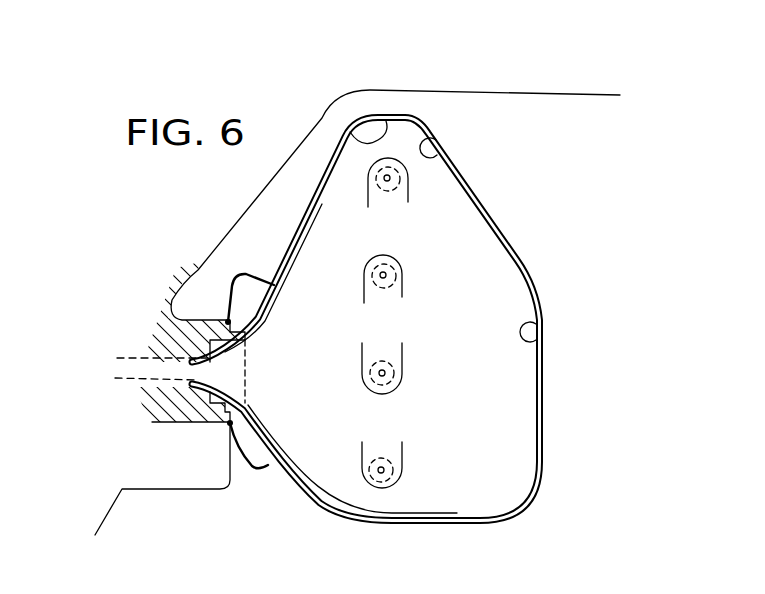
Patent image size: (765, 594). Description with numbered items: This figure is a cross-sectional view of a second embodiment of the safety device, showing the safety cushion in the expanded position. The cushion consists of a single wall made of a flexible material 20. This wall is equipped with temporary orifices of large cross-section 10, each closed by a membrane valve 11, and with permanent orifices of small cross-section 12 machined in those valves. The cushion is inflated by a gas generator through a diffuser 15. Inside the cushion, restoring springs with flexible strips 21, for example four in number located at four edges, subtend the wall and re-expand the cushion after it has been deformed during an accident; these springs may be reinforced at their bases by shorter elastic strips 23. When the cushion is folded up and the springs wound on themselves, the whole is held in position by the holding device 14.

The temporary orifice of large cross-section 10 is at (402, 168).
The membrane valve 11 is at (403, 194).
The permanent orifice of small cross-section 12 is at (387, 181).
The holding device 14 is at (237, 443).
The diffuser 15 is at (196, 343).
The flexible material 20 is at (515, 267).
The restoring spring with flexible strip 21 is at (350, 134).
The shorter elastic strip 23 is at (242, 402).